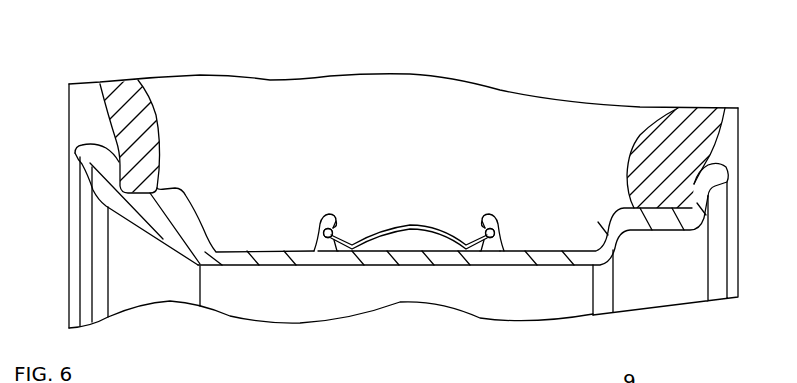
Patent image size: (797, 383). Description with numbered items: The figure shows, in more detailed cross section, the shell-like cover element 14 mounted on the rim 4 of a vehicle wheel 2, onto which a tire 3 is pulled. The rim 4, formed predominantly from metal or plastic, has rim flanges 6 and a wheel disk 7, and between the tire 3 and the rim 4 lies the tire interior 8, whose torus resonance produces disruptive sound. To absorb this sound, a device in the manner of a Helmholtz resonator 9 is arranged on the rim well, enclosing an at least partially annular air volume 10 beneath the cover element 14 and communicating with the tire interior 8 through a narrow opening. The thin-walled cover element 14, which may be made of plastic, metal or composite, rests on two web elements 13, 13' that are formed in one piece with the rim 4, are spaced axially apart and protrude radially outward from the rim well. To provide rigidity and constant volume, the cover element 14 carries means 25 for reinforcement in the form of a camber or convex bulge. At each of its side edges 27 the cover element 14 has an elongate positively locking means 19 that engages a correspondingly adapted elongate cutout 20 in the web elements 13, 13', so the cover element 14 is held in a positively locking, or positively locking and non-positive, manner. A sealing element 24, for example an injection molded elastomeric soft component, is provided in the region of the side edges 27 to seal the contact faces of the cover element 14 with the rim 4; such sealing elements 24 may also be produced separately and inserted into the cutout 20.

The vehicle wheel 2 is at (163, 68).
The tire 3 is at (110, 120).
The rim 4 is at (731, 243).
The rim flange 6 is at (88, 150).
The wheel disk 7 is at (90, 315).
The tire interior 8 is at (347, 113).
The Helmholtz resonator 9 is at (428, 170).
The annular air volume 10 is at (425, 247).
The web element 13 is at (525, 225).
The web element 13' is at (292, 232).
The cover element 14 is at (380, 238).
The positively locking means 19 is at (320, 221).
The cutout 20 is at (328, 253).
The sealing element 24 is at (320, 221).
The means for reinforcement 25 is at (400, 225).
The side edge 27 is at (339, 227).